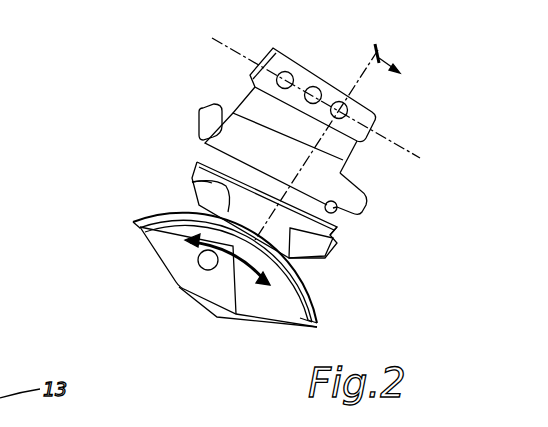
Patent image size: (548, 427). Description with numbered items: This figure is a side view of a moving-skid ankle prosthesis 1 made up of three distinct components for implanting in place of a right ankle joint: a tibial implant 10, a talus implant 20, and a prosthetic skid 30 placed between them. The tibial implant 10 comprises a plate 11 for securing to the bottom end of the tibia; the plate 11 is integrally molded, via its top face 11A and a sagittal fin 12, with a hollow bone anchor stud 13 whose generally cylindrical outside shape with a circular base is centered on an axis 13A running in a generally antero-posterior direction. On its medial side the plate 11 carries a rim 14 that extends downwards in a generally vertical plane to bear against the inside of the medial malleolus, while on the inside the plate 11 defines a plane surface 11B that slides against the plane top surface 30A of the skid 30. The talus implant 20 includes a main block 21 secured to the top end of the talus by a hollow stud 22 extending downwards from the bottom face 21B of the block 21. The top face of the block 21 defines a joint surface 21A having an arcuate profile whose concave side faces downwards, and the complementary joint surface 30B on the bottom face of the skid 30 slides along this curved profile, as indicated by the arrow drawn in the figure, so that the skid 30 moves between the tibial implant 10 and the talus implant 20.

The vehicle body fastening device 1 is at (276, 184).
The tibial implant 10 is at (90, 32).
The plate 11 is at (292, 172).
The top face 11A is at (365, 190).
The plane surface 11B is at (349, 218).
The sagittal fin 12 is at (263, 110).
The hollow bone anchor stud 13 is at (270, 47).
The axis 13A is at (412, 150).
The rim 14 is at (196, 118).
The talus implant 20 is at (52, 250).
The main block 21 is at (237, 258).
The joint surface 21A is at (212, 183).
The bottom face 21B is at (283, 316).
The hollow stud 22 is at (200, 279).
The prosthetic skid 30 is at (246, 232).
The plane top surface 30A is at (343, 220).
The joint surface 30B is at (289, 259).